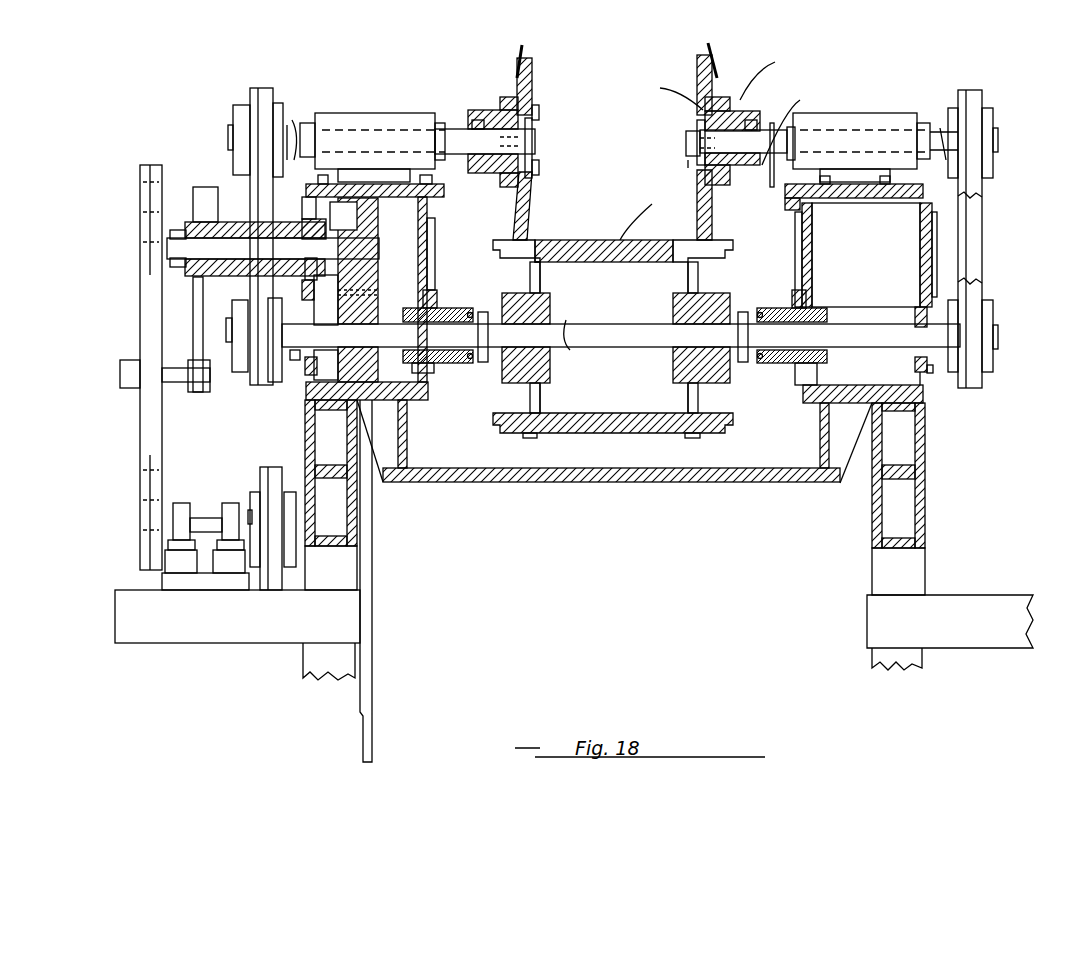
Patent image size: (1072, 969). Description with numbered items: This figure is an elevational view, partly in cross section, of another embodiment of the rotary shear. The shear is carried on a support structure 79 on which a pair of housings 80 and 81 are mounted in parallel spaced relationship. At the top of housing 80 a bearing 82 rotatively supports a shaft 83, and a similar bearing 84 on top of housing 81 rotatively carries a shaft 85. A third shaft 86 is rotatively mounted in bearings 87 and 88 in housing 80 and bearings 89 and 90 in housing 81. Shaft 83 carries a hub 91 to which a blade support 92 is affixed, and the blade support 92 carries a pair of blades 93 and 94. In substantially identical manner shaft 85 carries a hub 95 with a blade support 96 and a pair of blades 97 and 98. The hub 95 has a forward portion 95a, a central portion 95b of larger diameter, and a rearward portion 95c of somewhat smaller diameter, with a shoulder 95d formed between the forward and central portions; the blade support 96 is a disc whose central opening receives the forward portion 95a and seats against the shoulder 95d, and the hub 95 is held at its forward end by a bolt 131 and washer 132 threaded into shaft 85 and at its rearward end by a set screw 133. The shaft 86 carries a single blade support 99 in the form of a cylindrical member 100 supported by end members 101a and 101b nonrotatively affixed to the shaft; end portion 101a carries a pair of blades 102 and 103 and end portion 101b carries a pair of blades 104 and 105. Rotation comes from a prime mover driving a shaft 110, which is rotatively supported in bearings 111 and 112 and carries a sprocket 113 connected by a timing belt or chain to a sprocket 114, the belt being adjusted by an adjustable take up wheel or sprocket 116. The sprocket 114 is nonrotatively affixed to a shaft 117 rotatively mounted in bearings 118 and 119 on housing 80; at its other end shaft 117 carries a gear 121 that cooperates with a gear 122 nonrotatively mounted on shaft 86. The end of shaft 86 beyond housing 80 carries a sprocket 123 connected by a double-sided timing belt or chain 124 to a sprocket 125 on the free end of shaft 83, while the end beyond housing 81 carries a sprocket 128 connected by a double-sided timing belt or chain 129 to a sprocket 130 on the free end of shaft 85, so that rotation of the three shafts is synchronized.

The support structure 79 is at (935, 552).
The housing 80 is at (424, 238).
The housing 81 is at (918, 227).
The bearing 82 is at (350, 117).
The shaft 83 is at (456, 125).
The bearing 84 is at (870, 115).
The shaft 85 is at (765, 150).
The shaft 86 is at (616, 324).
The bearing 87 is at (306, 354).
The bearing 88 is at (454, 308).
The bearing 89 is at (820, 310).
The bearing 90 is at (915, 320).
The hub 91 is at (500, 118).
The blade support 92 is at (532, 68).
The blade 93 is at (518, 60).
The blade 94 is at (516, 235).
The hub 95 is at (735, 112).
The forward portion 95a is at (698, 122).
The central portion 95b is at (770, 71).
The rearward portion 95c is at (793, 122).
The shoulder 95d is at (657, 91).
The blade support 96 is at (697, 78).
The blade 97 is at (715, 50).
The blade 98 is at (712, 235).
The blade support 99 is at (643, 212).
The cylindrical member 100 is at (592, 240).
The end member 101a is at (542, 305).
The end member 101b is at (700, 282).
The blade 102 is at (520, 240).
The blade 103 is at (528, 438).
The blade 104 is at (700, 240).
The blade 105 is at (690, 438).
The shaft 110 is at (206, 518).
The bearing 111 is at (180, 503).
The bearing 112 is at (232, 503).
The sprocket 113 is at (160, 493).
The sprocket 114 is at (140, 188).
The take up wheel or sprocket 116 is at (138, 398).
The shaft 117 is at (225, 245).
The bearing 118 is at (182, 265).
The bearing 119 is at (334, 239).
The gear 121 is at (372, 228).
The gear 122 is at (372, 306).
The sprocket 123 is at (248, 380).
The double-sided timing belt or chain 124 is at (262, 88).
The sprocket 125 is at (233, 108).
The sprocket 128 is at (994, 314).
The double-sided timing belt or chain 129 is at (982, 225).
The sprocket 130 is at (994, 118).
The bolt 131 is at (686, 140).
The washer 132 is at (690, 160).
The set screw 133 is at (772, 165).